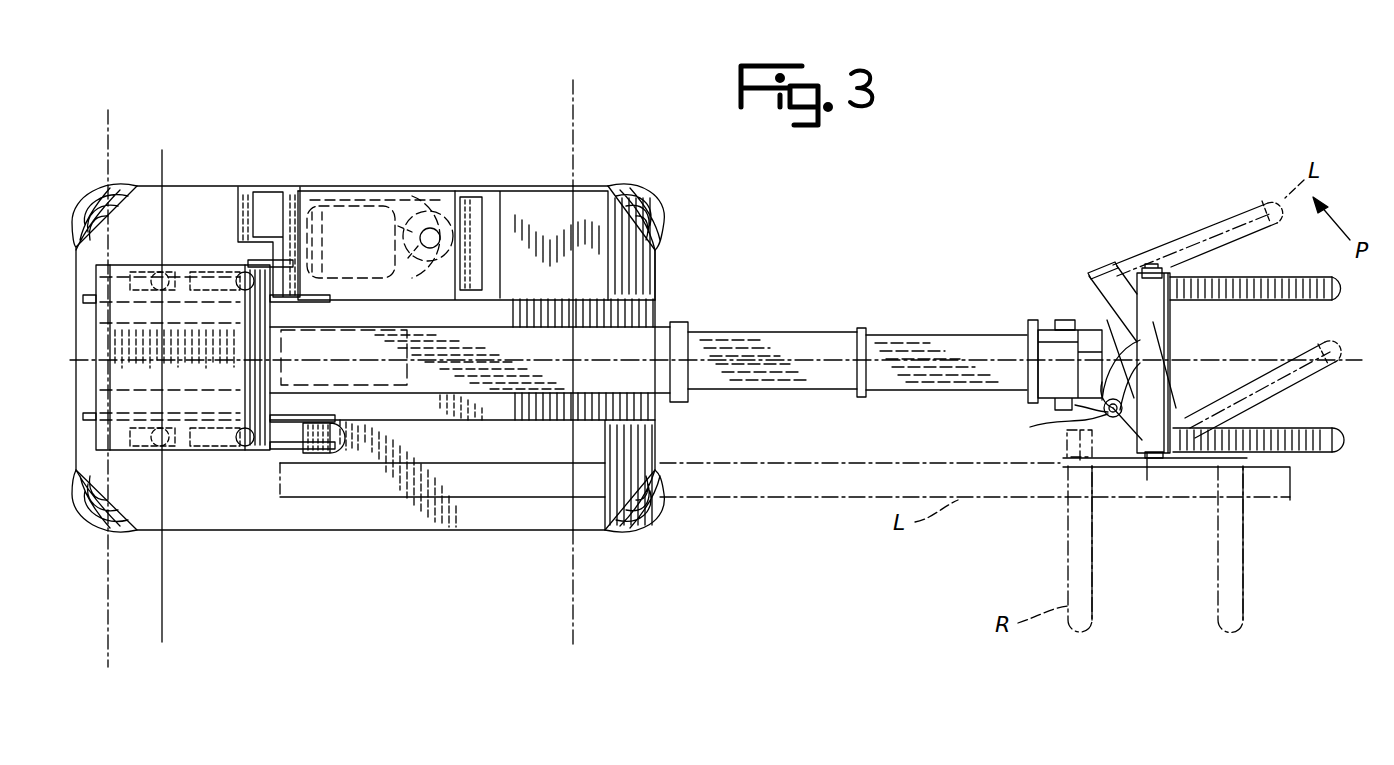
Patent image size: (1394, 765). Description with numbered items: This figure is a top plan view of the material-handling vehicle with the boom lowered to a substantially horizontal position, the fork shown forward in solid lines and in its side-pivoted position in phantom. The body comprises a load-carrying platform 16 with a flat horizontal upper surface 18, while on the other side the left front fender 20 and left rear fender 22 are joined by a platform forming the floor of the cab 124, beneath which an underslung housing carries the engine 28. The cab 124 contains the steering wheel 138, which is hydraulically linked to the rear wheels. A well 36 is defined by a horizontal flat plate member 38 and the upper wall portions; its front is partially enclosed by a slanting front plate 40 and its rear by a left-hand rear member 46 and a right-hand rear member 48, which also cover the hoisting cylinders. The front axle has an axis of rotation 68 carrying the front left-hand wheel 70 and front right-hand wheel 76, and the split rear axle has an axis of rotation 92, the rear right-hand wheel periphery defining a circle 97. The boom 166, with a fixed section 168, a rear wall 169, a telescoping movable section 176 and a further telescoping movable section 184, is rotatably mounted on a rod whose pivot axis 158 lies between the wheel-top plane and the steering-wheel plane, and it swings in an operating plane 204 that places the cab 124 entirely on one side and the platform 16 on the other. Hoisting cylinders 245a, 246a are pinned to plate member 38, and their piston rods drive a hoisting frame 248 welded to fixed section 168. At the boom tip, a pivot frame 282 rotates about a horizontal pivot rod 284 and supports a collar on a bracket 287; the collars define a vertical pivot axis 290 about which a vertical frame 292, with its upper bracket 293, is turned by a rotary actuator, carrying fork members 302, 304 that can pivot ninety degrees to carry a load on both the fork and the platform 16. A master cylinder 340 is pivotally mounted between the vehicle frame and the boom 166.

The load-carrying platform 16 is at (372, 364).
The upper surface 18 is at (360, 528).
The left front fender 20 is at (566, 186).
The left rear fender 22 is at (165, 182).
The engine 28 is at (408, 378).
The well 36 is at (490, 410).
The horizontal flat plate member 38 is at (662, 318).
The slanting front plate 40 is at (503, 316).
The left-hand rear member 46 is at (240, 249).
The right-hand rear member 48 is at (337, 453).
The axis of rotation 68 is at (573, 642).
The front left-hand wheel 70 is at (640, 196).
The front right-hand wheel 76 is at (630, 530).
The axis of rotation 92 is at (160, 600).
The circle 97 is at (78, 526).
The cab 124 is at (398, 190).
The steering wheel 138 is at (450, 194).
The pivot axis 158 is at (108, 600).
The boom 166 is at (795, 330).
The fixed section 168 is at (446, 328).
The rear wall 169 is at (80, 366).
The telescoping movable section 176 is at (832, 332).
The telescoping movable section 184 is at (934, 342).
The operating plane 204 is at (1240, 366).
The cylinder 245a is at (288, 450).
The cylinder 246a is at (322, 196).
The hoisting frame 248 is at (274, 326).
The pivot frame 282 is at (1065, 322).
The horizontal pivot rod 284 is at (1040, 312).
The bracket 287 is at (1158, 338).
The vertical pivot axis 290 is at (1060, 426).
The vertical frame 292 is at (1168, 326).
The upper bracket 293 is at (1152, 358).
The fork member 302 is at (1222, 226).
The fork member 304 is at (1318, 376).
The master cylinder 340 is at (186, 455).